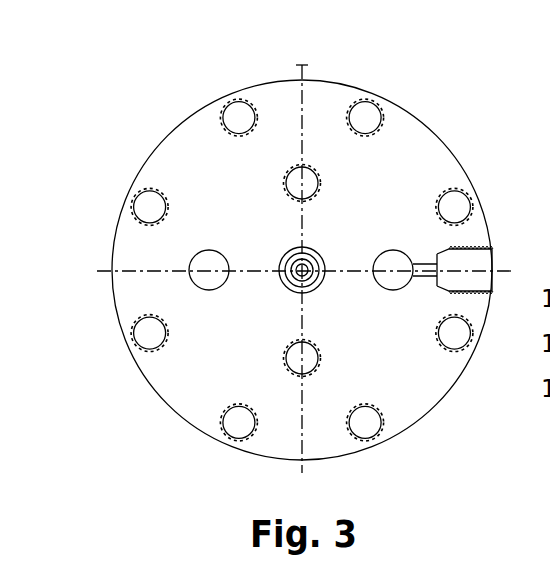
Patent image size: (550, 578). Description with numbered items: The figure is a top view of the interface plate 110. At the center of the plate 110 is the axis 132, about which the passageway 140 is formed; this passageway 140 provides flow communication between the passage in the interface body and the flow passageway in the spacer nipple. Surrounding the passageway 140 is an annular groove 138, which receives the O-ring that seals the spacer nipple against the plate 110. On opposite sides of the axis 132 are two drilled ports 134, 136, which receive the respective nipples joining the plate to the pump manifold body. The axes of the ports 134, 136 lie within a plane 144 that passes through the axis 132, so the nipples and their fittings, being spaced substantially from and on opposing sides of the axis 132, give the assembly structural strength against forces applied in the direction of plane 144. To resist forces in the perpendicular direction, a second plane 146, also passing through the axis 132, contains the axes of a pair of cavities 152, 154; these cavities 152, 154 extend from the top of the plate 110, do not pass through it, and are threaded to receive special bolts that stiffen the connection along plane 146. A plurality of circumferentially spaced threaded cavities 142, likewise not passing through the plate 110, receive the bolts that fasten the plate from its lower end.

The plate 110 is at (440, 163).
The axis 132 is at (298, 274).
The drilled port 134 is at (203, 262).
The drilled port 136 is at (398, 290).
The annular groove 138 is at (315, 255).
The passageway 140 is at (307, 278).
The threaded cavities 142 is at (367, 117).
The plane 144 is at (506, 262).
The plane 146 is at (302, 70).
The cavity 152 is at (290, 360).
The cavity 154 is at (290, 183).